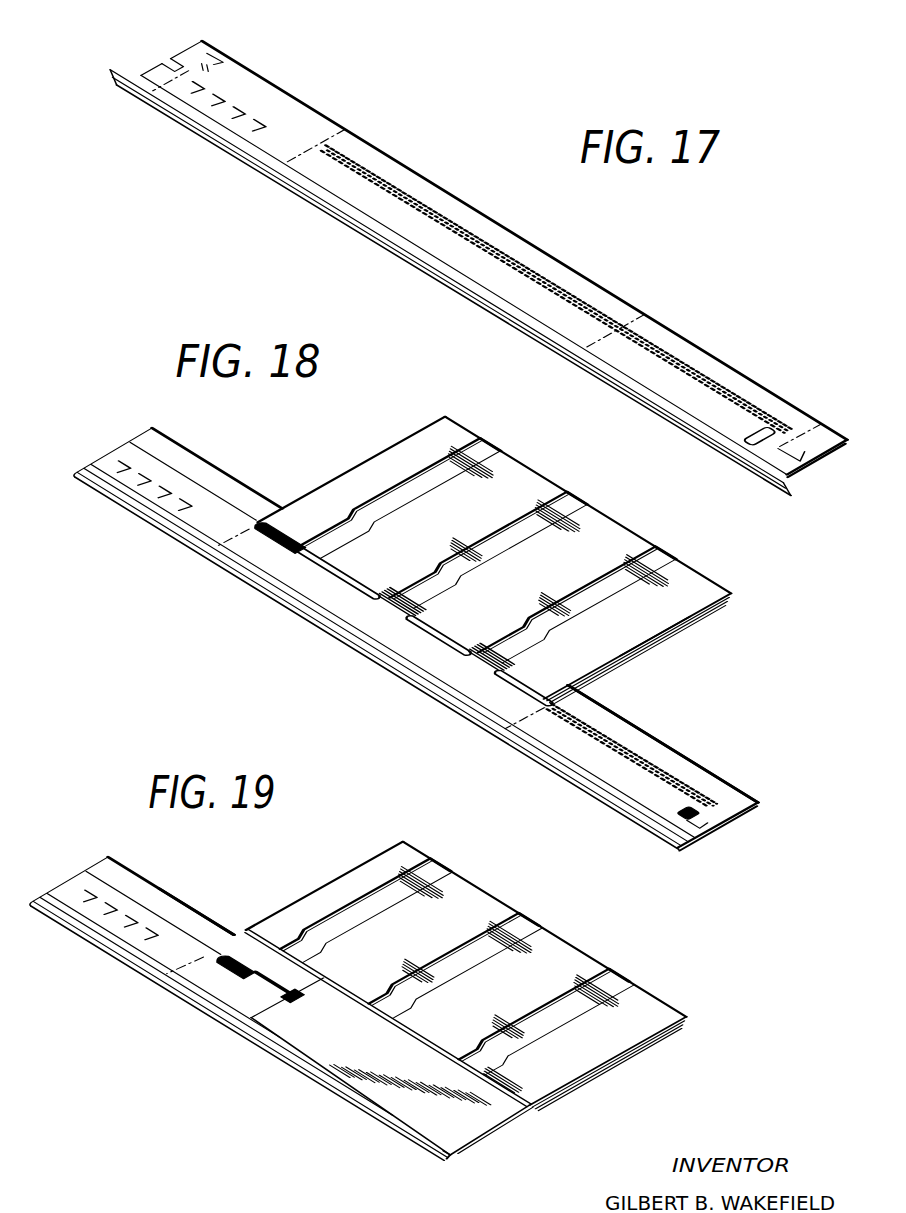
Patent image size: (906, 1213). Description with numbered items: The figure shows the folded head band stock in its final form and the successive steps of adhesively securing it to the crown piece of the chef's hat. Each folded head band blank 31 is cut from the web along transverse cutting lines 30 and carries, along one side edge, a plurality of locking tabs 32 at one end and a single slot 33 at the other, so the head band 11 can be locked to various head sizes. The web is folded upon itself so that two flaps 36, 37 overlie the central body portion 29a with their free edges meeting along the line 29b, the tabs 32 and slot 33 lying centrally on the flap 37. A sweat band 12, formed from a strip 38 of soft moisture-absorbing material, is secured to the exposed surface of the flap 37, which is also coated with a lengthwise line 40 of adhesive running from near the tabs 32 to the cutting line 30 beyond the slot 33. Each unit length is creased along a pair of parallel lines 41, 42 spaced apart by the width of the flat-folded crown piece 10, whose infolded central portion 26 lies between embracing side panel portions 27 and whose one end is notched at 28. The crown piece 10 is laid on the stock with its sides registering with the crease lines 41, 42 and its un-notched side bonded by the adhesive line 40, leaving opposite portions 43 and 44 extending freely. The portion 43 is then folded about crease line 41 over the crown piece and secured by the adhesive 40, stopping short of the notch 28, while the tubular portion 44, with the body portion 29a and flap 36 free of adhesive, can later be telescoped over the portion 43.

In FIG. 18, the crown piece 10 is at (409, 441).
In FIG. 19, the crown piece 10 is at (348, 871).
In FIG. 18, the head band 11 is at (631, 722).
In FIG. 19, the head band 11 is at (463, 1128).
In FIG. 18, the sweat band 12 is at (363, 650).
In FIG. 19, the sweat band 12 is at (148, 958).
In FIG. 18, the central portion 26 is at (637, 647).
In FIG. 18, the side panel portions 27 is at (690, 626).
In FIG. 18, the notch 28 is at (296, 540).
In FIG. 19, the notch 28 is at (250, 955).
In FIG. 19, the central body portion 29a is at (386, 1066).
In FIG. 17, the line 29b is at (657, 323).
In FIG. 17, the cutting lines 30 is at (224, 57).
In FIG. 18, the head band blank 31 is at (253, 574).
In FIG. 19, the head band blank 31 is at (203, 978).
In FIG. 17, the locking tabs 32 is at (245, 122).
In FIG. 18, the locking tabs 32 is at (170, 510).
In FIG. 19, the locking tabs 32 is at (140, 948).
In FIG. 17, the slot 33 is at (745, 459).
In FIG. 18, the slot 33 is at (708, 822).
In FIG. 17, the flap 36 is at (514, 242).
In FIG. 18, the flap 36 is at (660, 750).
In FIG. 19, the flap 36 is at (153, 893).
In FIG. 17, the flap 37 is at (452, 283).
In FIG. 18, the flap 37 is at (577, 755).
In FIG. 19, the flap 37 is at (243, 1002).
In FIG. 17, the sweat band strip 38 is at (517, 322).
In FIG. 17, the line of adhesive 40 is at (413, 198).
In FIG. 18, the line of adhesive 40 is at (628, 752).
In FIG. 17, the crease line 41 is at (340, 135).
In FIG. 18, the crease line 41 is at (236, 530).
In FIG. 19, the crease line 41 is at (200, 963).
In FIG. 17, the crease line 42 is at (612, 315).
In FIG. 18, the crease line 42 is at (527, 713).
In FIG. 19, the crease line 42 is at (451, 1156).
In FIG. 18, the freely extending portion 43 is at (646, 793).
In FIG. 19, the freely extending portion 43 is at (387, 1087).
In FIG. 18, the freely extending portion 44 is at (164, 552).
In FIG. 19, the freely extending portion 44 is at (100, 878).